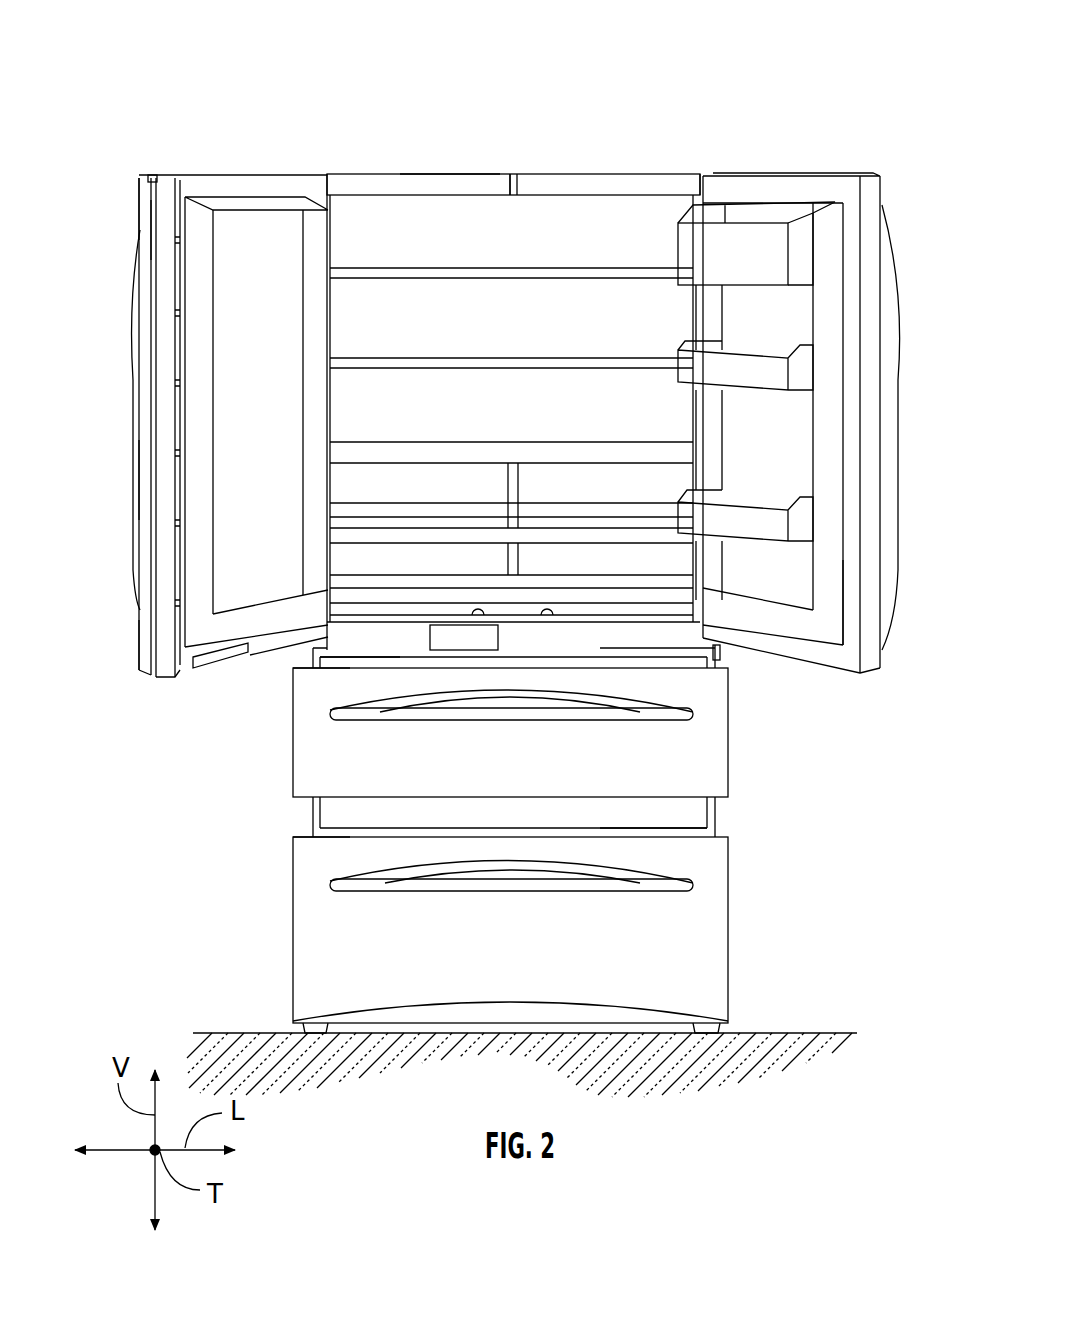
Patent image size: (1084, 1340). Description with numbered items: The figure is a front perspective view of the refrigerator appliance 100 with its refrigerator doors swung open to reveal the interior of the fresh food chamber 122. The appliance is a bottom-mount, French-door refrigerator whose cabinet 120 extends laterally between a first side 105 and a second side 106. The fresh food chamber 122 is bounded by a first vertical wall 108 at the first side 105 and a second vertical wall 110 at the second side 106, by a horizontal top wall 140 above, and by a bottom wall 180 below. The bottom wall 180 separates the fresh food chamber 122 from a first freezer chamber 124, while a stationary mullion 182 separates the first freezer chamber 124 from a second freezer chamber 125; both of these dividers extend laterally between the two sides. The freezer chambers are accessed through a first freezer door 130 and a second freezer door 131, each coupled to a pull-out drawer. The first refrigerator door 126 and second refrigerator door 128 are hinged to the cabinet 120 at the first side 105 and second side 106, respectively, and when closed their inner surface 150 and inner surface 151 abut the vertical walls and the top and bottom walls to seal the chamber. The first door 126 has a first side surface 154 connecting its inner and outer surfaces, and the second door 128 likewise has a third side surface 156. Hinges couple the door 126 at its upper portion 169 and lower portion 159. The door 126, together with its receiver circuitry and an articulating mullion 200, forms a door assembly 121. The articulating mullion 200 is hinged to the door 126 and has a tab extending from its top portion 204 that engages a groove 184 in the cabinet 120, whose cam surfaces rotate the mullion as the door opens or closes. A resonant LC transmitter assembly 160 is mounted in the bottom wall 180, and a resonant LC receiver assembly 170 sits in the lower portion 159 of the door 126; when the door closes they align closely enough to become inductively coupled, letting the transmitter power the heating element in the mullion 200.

The refrigerator appliance 100 is at (713, 38).
The first side 105 is at (342, 168).
The second side 106 is at (712, 158).
The first vertical wall 108 is at (313, 655).
The second vertical wall 110 is at (717, 650).
The cabinet 120 is at (305, 807).
The door assembly 121 is at (117, 480).
The fresh food chamber 122 is at (587, 215).
The first freezer chamber 124 is at (342, 666).
The second freezer chamber 125 is at (340, 836).
The first refrigerator door 126 is at (285, 175).
The second refrigerator door 128 is at (800, 175).
The first freezer door 130 is at (705, 750).
The second freezer door 131 is at (697, 940).
The top wall 140 is at (440, 175).
The inner surface 150 is at (230, 175).
The inner surface 151 is at (845, 652).
The first side surface 154 is at (165, 172).
The third side surface 156 is at (878, 645).
The lower portion 159 is at (115, 660).
The resonant LC transmitter assembly 160 is at (430, 652).
The upper portion 169 is at (125, 220).
The resonant LC receiver assembly 170 is at (200, 662).
The bottom wall 180 is at (645, 650).
The stationary mullion 182 is at (700, 805).
The groove 184 is at (515, 168).
The articulating mullion 200 is at (145, 432).
The top portion 204 is at (132, 178).